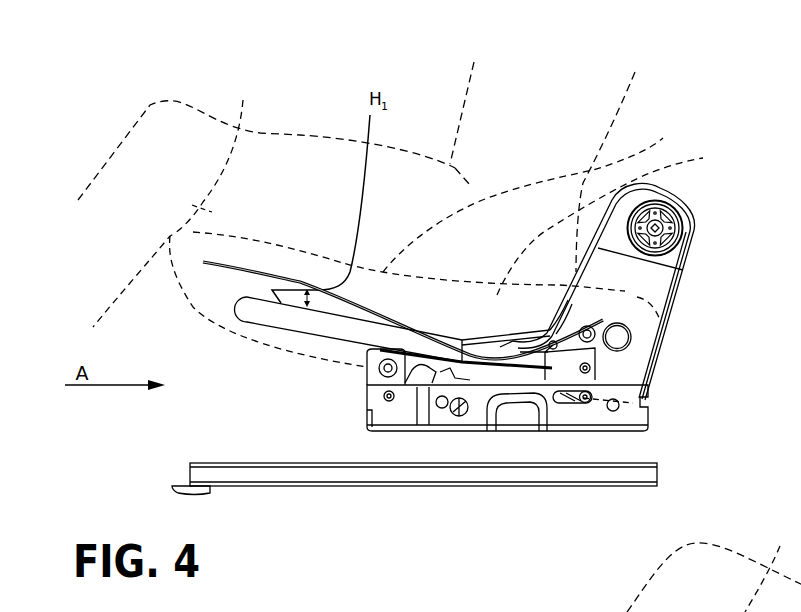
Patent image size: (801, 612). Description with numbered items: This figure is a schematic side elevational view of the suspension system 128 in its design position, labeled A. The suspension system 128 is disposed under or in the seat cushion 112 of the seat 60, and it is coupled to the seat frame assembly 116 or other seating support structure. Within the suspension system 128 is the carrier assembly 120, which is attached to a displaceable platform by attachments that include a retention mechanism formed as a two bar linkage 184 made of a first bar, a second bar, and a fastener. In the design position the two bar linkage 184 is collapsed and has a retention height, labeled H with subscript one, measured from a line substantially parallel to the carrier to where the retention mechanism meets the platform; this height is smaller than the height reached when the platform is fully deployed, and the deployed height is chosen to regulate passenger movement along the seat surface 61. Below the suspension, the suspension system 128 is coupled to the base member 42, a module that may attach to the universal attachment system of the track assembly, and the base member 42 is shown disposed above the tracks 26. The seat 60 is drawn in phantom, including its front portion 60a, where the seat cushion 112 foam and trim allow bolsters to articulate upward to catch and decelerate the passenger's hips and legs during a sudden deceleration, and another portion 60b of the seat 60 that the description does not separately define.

The tracks 26 is at (655, 472).
The base member 42 is at (630, 415).
The seat 60 is at (626, 290).
The front portion 60a is at (243, 100).
The seat back lower portion 60b is at (657, 370).
The seat surface 61 is at (664, 138).
The seat cushion 112 is at (624, 222).
The seat frame assembly 116 is at (367, 370).
The carrier assembly 120 is at (324, 336).
The suspension system 128 is at (228, 299).
The two bar linkage 184 is at (250, 286).